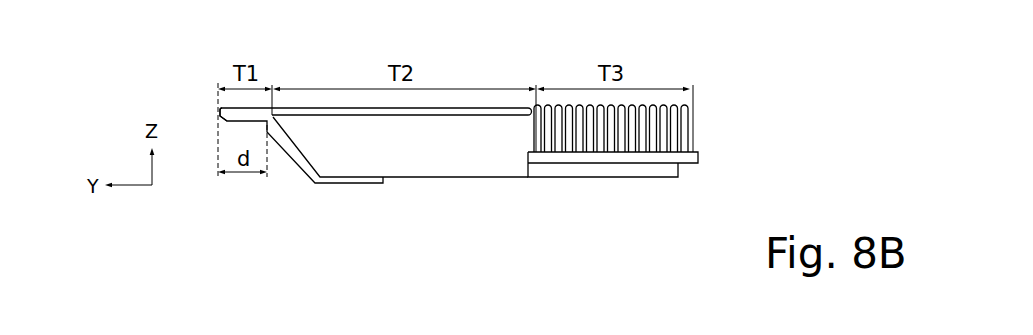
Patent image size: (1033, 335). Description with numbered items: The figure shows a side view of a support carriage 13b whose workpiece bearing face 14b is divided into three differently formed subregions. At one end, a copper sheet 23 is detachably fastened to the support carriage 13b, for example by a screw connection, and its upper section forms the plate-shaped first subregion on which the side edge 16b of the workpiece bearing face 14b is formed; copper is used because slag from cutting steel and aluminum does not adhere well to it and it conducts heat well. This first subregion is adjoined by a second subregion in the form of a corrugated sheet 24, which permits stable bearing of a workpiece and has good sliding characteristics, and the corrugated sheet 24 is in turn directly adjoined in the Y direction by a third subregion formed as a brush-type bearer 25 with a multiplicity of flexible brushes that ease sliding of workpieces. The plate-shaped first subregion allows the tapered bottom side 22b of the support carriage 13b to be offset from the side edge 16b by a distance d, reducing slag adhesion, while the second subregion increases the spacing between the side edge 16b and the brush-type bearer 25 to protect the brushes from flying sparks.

The support carriage 13b is at (669, 69).
The workpiece bearing face 14b is at (454, 76).
The side edge 16b is at (206, 111).
The tapered bottom side 22b is at (301, 169).
The copper sheet 23 is at (246, 113).
The corrugated sheet 24 is at (400, 116).
The brush-type bearer 25 is at (644, 127).